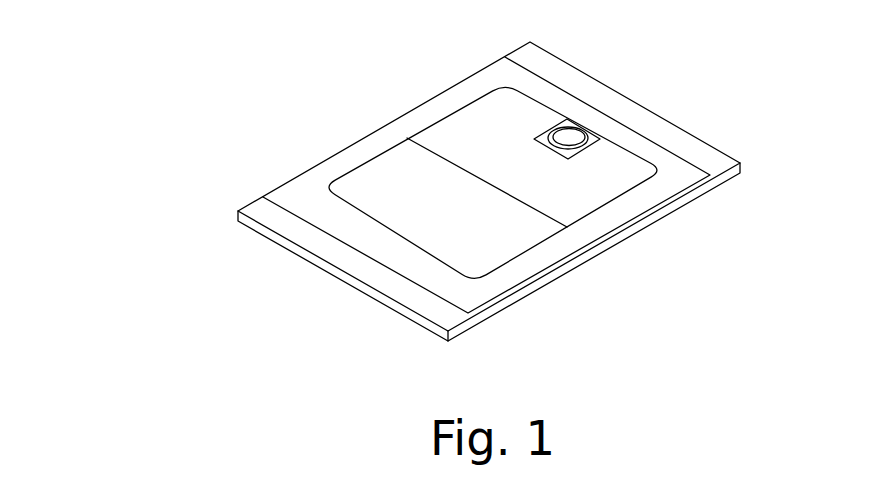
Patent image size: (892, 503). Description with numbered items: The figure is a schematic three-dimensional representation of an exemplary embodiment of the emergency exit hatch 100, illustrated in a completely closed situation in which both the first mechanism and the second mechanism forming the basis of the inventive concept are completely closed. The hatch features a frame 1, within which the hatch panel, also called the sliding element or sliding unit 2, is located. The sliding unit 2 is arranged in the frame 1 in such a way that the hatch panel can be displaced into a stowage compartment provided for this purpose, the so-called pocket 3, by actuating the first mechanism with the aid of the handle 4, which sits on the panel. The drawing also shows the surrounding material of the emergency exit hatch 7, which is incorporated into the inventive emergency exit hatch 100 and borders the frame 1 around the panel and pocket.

The emergency exit hatch 100 is at (202, 100).
The frame 1 is at (682, 169).
The sliding unit 2 is at (592, 197).
The pocket 3 is at (502, 250).
The handle 4 is at (569, 137).
The surrounding material of the emergency exit hatch 7 is at (347, 257).